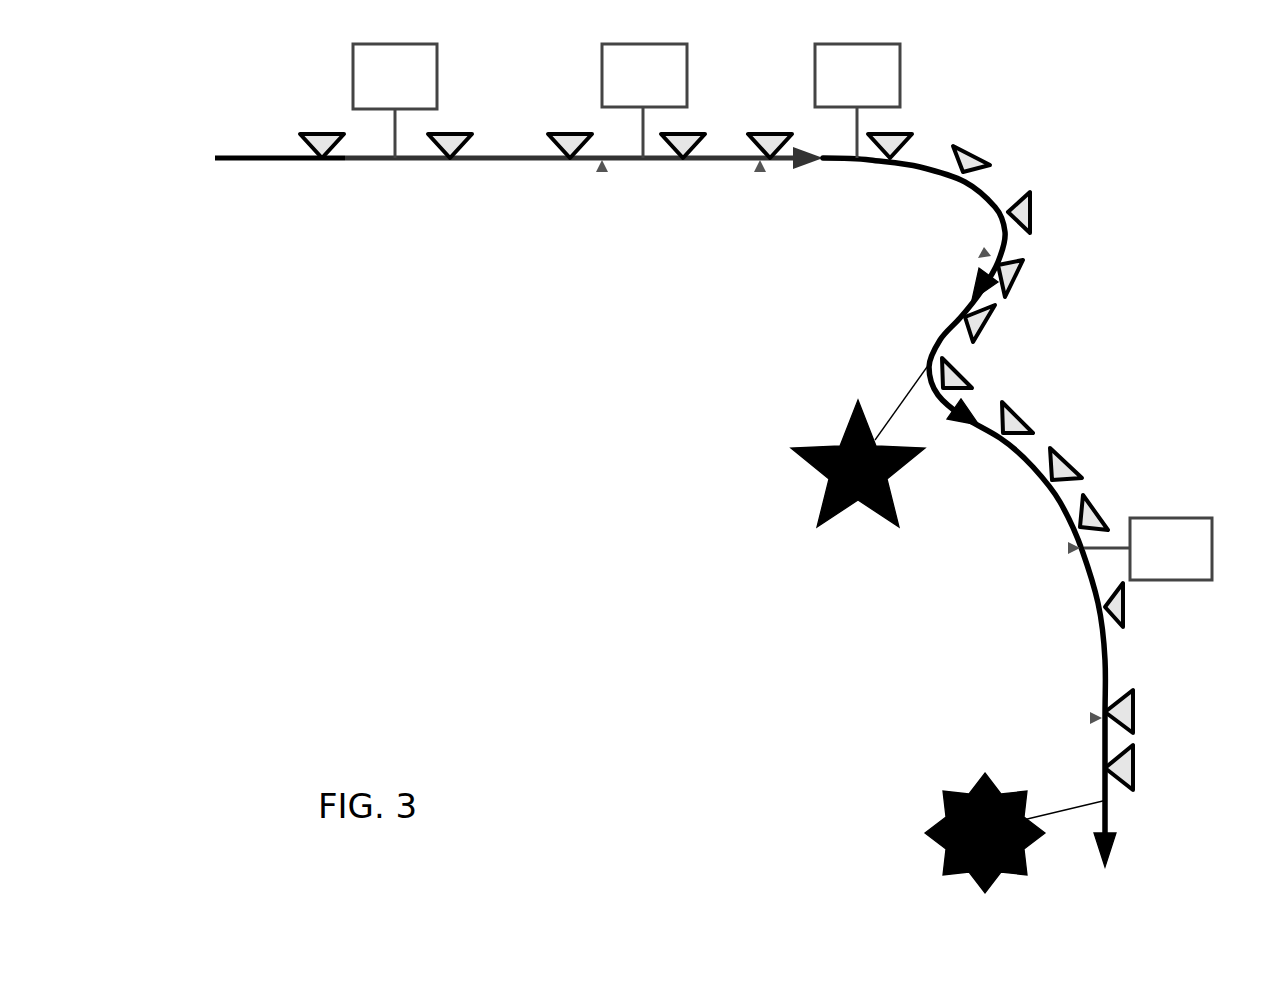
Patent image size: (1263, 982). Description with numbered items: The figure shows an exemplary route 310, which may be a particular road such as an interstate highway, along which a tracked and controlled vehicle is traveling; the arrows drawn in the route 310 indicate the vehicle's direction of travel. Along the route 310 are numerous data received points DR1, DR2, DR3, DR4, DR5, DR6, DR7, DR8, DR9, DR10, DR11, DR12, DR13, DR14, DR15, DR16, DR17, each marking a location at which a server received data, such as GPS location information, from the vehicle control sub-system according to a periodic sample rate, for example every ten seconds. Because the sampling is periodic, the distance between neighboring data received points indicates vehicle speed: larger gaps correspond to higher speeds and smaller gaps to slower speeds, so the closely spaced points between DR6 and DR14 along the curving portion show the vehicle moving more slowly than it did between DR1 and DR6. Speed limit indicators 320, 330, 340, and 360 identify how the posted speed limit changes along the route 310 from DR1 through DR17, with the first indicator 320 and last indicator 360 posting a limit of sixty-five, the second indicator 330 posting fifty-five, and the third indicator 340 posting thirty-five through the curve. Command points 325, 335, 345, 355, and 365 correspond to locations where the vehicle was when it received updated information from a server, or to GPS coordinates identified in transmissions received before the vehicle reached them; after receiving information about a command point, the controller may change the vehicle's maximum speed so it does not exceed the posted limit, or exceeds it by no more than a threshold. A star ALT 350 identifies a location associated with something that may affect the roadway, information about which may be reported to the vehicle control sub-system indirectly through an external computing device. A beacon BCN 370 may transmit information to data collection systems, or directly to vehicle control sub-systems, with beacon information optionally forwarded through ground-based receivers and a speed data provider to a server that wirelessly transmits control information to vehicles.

The route 310 is at (365, 161).
The speed limit indicator SL 65 320 is at (378, 102).
The command point 325 is at (602, 168).
The speed limit indicator SL 55 330 is at (627, 102).
The command point 335 is at (760, 168).
The speed limit indicator SL 35 340 is at (840, 102).
The command point 345 is at (985, 253).
The star ALT 350 is at (859, 447).
The command point 355 is at (1072, 548).
The speed limit indicator SL 65 360 is at (1154, 575).
The command point 365 is at (1094, 718).
The beacon BCN 370 is at (1016, 833).
The data received point DR1 is at (318, 136).
The data received point DR2 is at (451, 134).
The data received point DR3 is at (568, 134).
The data received point DR4 is at (684, 133).
The data received point DR5 is at (769, 133).
The data received point DR6 is at (898, 133).
The data received point DR7 is at (969, 159).
The data received point DR8 is at (1029, 210).
The data received point DR9 is at (1018, 282).
The data received point DR10 is at (987, 318).
The data received point DR11 is at (960, 375).
The data received point DR12 is at (1019, 418).
The data received point DR13 is at (1063, 461).
The data received point DR14 is at (1089, 511).
The data received point DR15 is at (1125, 605).
The data received point DR16 is at (1135, 712).
The data received point DR17 is at (1135, 768).